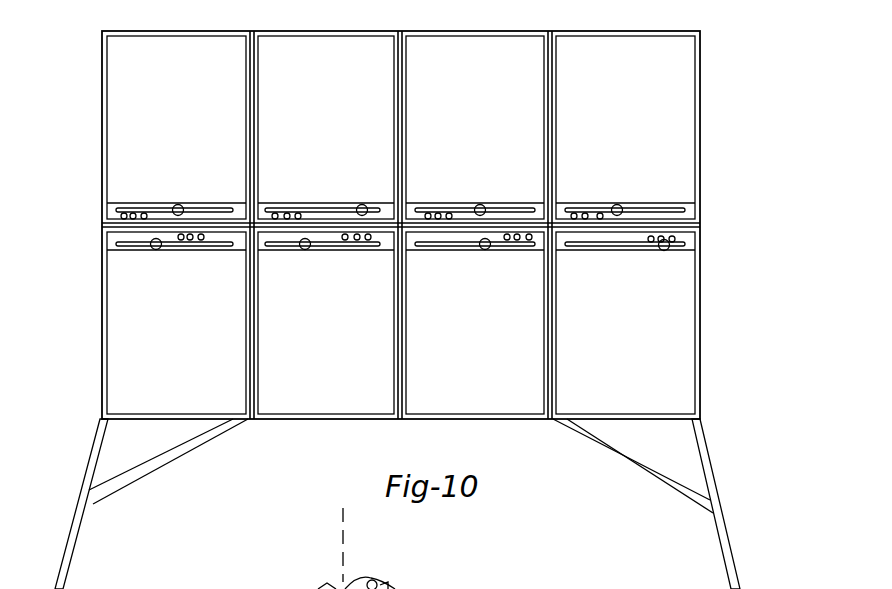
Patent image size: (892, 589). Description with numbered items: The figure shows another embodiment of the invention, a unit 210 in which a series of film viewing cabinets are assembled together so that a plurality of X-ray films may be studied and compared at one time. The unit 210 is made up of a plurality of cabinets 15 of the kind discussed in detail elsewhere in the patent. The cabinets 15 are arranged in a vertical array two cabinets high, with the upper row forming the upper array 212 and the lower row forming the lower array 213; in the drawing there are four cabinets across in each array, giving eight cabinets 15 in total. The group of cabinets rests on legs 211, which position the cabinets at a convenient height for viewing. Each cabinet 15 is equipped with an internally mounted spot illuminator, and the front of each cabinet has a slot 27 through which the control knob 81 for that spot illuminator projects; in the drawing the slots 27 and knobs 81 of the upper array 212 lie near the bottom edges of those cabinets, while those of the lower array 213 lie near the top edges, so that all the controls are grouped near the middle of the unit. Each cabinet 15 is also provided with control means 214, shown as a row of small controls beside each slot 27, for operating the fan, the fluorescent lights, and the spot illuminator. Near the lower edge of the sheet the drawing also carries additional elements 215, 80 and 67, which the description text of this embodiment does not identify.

The cabinet 15 is at (208, 31).
The slot 27 is at (203, 209).
The control knob 81 is at (178, 204).
The control means 214 is at (137, 212).
The upper array 212 is at (101, 140).
The lower array 213 is at (101, 330).
The unit 210 is at (708, 271).
The legs 211 is at (79, 530).
The lower element 215 is at (306, 588).
The roller 80 is at (381, 583).
The member 67 is at (492, 588).